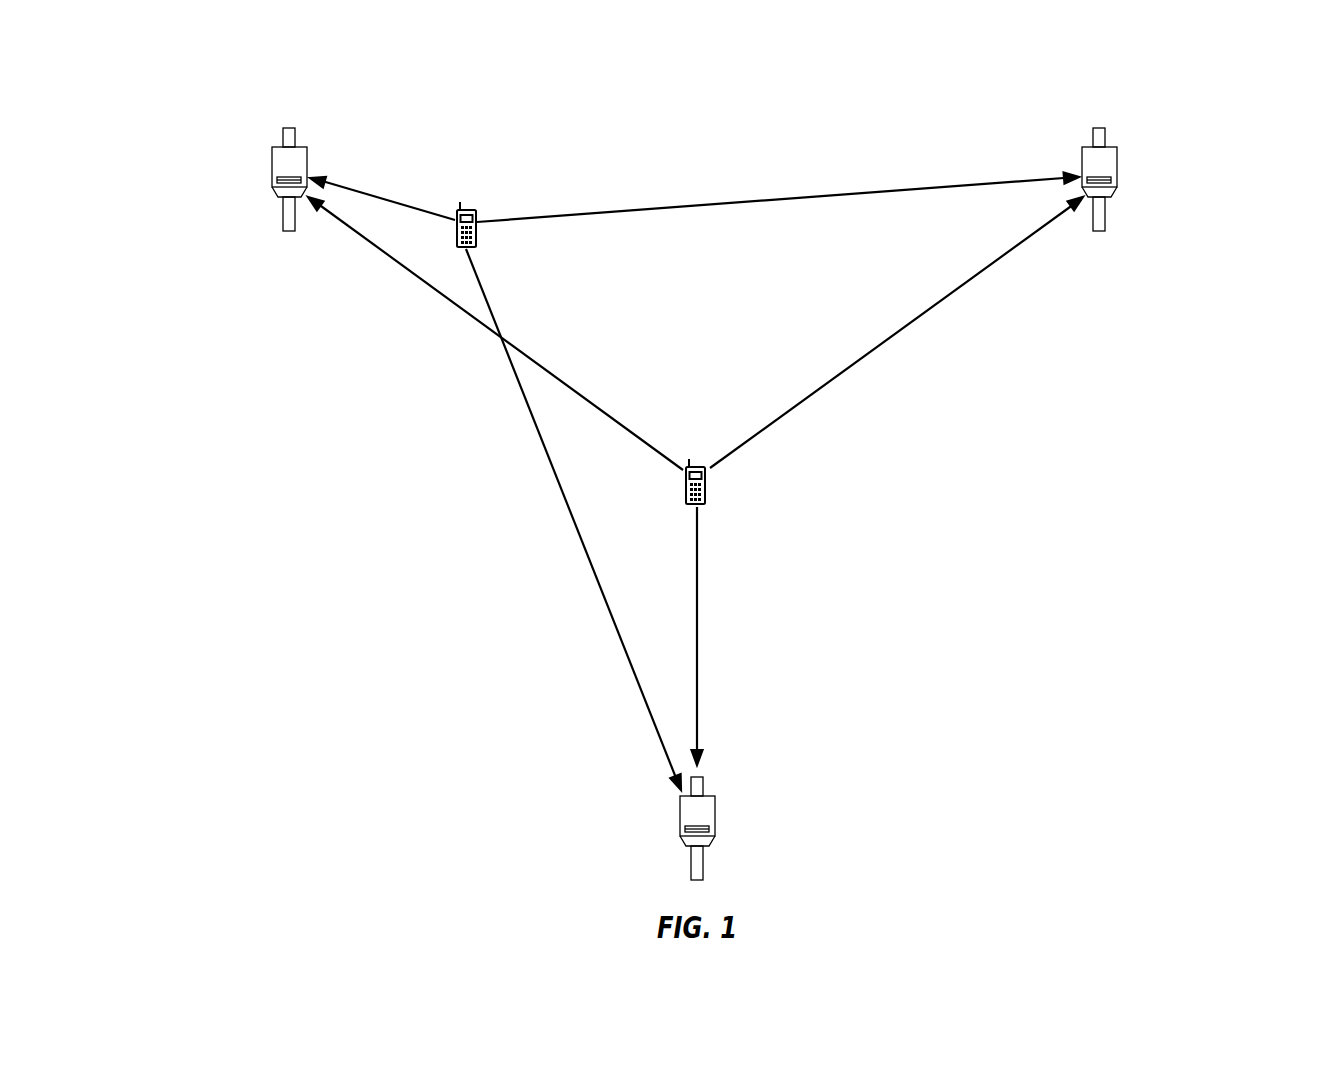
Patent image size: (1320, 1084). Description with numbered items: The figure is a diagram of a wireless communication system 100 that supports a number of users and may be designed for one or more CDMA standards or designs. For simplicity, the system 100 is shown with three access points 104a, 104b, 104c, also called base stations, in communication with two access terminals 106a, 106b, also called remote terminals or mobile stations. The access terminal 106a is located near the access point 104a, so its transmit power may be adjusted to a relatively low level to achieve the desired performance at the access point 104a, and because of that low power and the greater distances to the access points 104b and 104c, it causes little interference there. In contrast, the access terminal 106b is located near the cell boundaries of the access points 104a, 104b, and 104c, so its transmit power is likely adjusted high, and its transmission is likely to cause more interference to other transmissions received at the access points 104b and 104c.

The wireless communication system 100 is at (1236, 107).
The access point 104a is at (299, 147).
The access point 104b is at (1109, 147).
The access point 104c is at (707, 796).
The access terminal 106a is at (487, 197).
The access terminal 106b is at (712, 454).